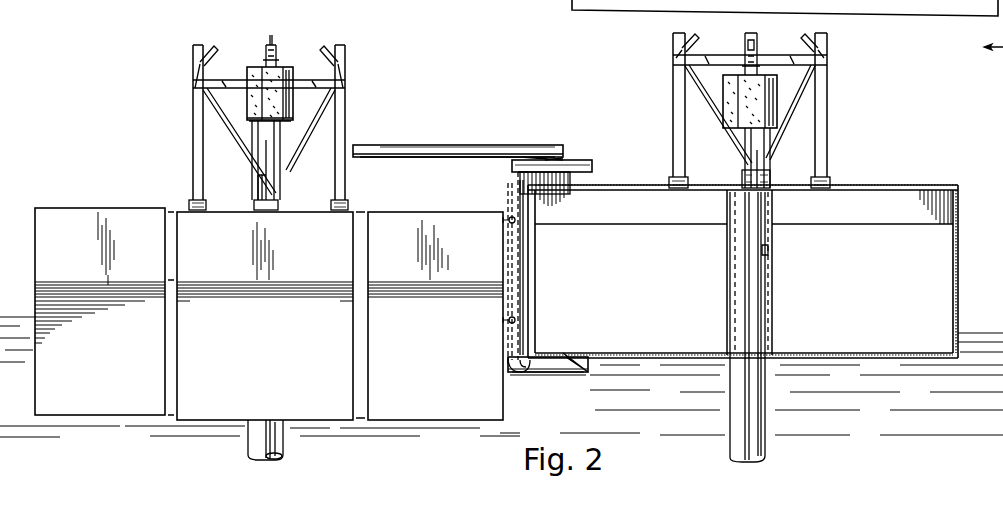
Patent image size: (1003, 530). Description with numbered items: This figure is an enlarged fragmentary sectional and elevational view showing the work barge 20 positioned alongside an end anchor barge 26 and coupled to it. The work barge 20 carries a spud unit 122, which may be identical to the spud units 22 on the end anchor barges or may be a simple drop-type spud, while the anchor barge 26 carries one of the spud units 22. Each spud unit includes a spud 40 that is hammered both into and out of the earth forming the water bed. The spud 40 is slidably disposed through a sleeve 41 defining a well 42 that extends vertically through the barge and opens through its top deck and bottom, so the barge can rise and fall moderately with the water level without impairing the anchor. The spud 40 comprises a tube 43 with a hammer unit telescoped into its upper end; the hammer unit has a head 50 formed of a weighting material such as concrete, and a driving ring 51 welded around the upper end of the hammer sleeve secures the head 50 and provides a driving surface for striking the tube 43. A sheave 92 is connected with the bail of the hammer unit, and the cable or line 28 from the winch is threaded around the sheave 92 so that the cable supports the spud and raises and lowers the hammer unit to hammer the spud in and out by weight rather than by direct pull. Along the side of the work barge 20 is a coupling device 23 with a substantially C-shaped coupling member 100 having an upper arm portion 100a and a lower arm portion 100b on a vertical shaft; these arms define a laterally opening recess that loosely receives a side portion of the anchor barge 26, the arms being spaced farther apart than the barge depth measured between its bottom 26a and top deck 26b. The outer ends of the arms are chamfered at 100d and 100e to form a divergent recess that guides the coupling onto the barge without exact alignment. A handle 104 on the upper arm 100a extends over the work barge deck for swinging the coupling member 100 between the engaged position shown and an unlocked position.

The work barge 20 is at (108, 207).
The spud unit 22 is at (832, 78).
The coupling device 23 is at (525, 140).
The end barge 26 is at (962, 192).
The bottom 26a is at (652, 353).
The top deck 26b is at (650, 178).
The line 28 is at (745, 50).
The spud 40 is at (248, 192).
The sleeve 41 is at (772, 280).
The well 42 is at (769, 258).
The tube 43 is at (248, 436).
The head 50 is at (252, 67).
The driving ring 51 is at (246, 120).
The sheave 92 is at (272, 36).
The C-shaped coupling member 100 is at (508, 178).
The upper arm portion 100a is at (564, 192).
The lower arm portion 100b is at (540, 376).
The chamfer 100d is at (575, 180).
The chamfer 100e is at (585, 355).
The handle 104 is at (392, 133).
The spud unit 122 is at (194, 108).